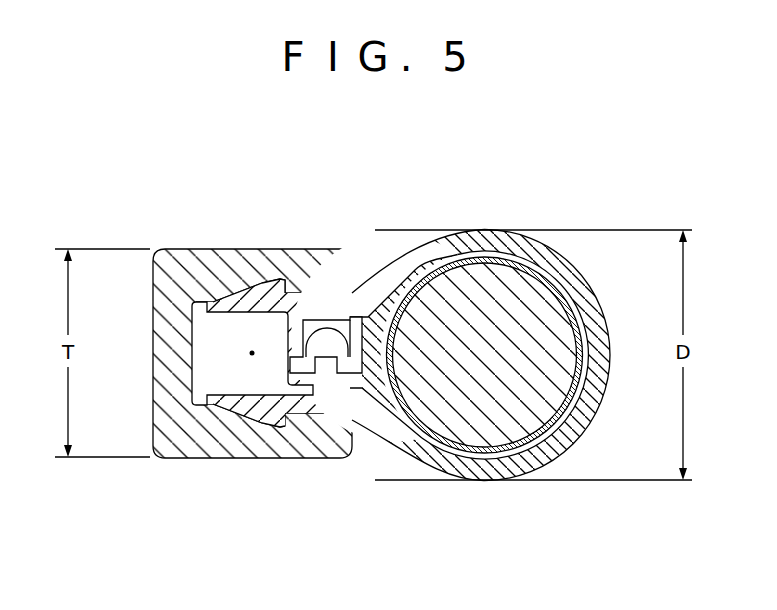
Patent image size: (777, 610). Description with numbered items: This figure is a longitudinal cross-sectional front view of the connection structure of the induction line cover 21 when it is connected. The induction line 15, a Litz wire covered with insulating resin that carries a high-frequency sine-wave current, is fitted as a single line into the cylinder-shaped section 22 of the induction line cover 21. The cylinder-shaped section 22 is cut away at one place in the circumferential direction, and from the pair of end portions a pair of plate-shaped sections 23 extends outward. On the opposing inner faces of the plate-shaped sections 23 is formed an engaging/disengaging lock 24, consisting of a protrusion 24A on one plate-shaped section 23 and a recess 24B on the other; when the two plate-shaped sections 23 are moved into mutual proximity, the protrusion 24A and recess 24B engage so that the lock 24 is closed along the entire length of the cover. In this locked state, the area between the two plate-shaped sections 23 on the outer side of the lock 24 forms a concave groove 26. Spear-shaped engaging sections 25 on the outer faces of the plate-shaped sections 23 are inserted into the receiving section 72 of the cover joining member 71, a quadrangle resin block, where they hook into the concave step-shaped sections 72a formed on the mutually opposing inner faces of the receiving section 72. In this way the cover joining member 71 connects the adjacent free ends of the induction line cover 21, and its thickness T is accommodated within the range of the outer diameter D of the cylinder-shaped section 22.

The induction line 15 is at (487, 421).
The induction line cover 21 is at (576, 440).
The cylinder-shaped section 22 is at (534, 250).
The plate-shaped sections 23 is at (325, 308).
The engaging/disengaging lock 24 is at (208, 524).
The protrusion 24A is at (323, 350).
The recess 24B is at (289, 386).
The engaging sections 25 is at (262, 283).
The concave groove 26 is at (252, 353).
The cover joining member 71 is at (163, 458).
The receiving section 72 is at (213, 354).
The concave step-shaped sections 72a is at (278, 282).